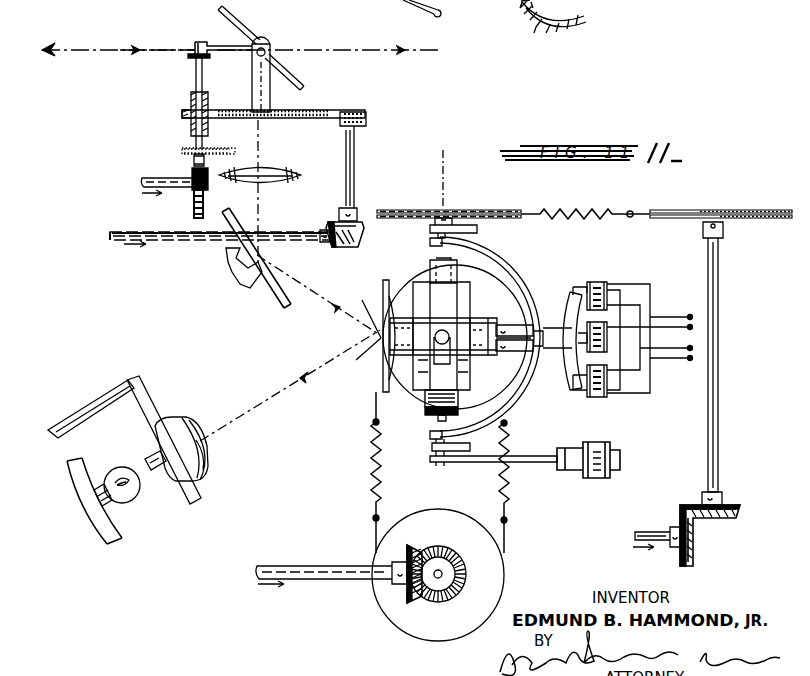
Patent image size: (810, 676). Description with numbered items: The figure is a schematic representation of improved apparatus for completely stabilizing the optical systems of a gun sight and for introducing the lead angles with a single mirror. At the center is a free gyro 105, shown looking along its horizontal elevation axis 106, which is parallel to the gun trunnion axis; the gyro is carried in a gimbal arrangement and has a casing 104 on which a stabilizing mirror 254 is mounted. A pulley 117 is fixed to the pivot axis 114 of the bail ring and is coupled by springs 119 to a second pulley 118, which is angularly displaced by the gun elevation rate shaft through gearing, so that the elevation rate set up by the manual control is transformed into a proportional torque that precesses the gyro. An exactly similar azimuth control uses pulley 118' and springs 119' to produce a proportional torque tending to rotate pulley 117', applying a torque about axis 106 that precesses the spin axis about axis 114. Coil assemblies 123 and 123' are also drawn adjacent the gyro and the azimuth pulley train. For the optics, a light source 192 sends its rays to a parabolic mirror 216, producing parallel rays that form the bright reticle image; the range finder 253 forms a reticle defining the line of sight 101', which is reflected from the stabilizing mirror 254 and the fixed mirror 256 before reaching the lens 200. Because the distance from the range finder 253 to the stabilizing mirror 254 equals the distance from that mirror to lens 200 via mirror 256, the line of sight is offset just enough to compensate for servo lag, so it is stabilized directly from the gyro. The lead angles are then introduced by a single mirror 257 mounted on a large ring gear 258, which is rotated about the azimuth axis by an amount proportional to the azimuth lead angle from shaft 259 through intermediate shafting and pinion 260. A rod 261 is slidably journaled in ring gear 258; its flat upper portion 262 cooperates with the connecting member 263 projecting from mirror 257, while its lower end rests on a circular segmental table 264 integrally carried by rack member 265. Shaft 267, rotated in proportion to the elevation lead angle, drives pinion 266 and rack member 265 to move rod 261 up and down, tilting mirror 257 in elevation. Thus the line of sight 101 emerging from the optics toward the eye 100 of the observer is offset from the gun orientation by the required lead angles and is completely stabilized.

The eye of the observer 100 is at (240, 32).
The line of sight 101 is at (145, 34).
The line of sight 101' is at (290, 280).
The casing 104 is at (472, 302).
The free gyro 105 is at (455, 337).
The horizontal axis 106 is at (378, 320).
The pivot axis 114 is at (444, 192).
The pulley 117 is at (449, 214).
The pulley 117' is at (491, 338).
The second pulley 118 is at (705, 383).
The pulley 118' is at (374, 575).
The springs 119 is at (585, 204).
The springs 119' is at (440, 472).
The coil assembly 123 is at (626, 327).
The coil 123' is at (525, 469).
The light source 192 is at (134, 502).
The lens 200 is at (274, 164).
The parabolic mirror 216 is at (129, 534).
The range finder 253 is at (209, 466).
The stabilizing mirror 254 is at (382, 292).
The fixed mirror 256 is at (276, 304).
The mirror 257 is at (246, 22).
The ring gear 258 is at (312, 112).
The shaft 259 is at (219, 259).
The pinion 260 is at (366, 112).
The rod 261 is at (206, 78).
The flat upper portion 262 is at (191, 64).
The connecting member 263 is at (200, 42).
The circular segmental table 264 is at (188, 152).
The rack member 265 is at (192, 169).
The pinion 266 is at (210, 188).
The shaft 267 is at (142, 181).